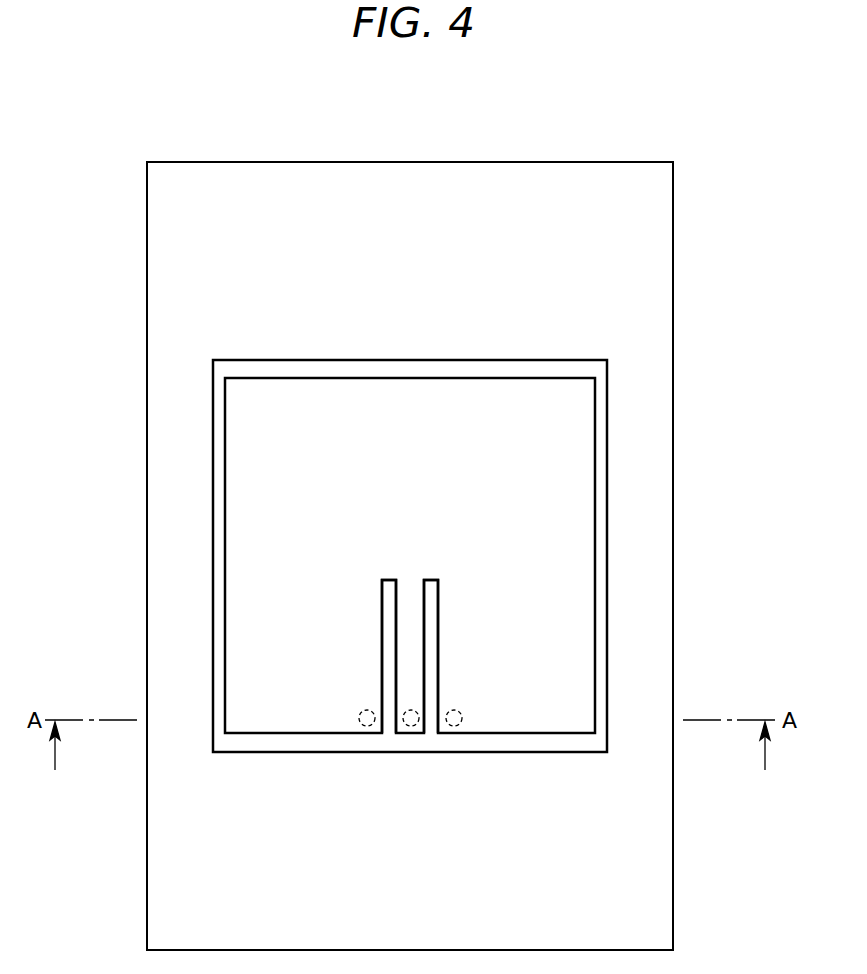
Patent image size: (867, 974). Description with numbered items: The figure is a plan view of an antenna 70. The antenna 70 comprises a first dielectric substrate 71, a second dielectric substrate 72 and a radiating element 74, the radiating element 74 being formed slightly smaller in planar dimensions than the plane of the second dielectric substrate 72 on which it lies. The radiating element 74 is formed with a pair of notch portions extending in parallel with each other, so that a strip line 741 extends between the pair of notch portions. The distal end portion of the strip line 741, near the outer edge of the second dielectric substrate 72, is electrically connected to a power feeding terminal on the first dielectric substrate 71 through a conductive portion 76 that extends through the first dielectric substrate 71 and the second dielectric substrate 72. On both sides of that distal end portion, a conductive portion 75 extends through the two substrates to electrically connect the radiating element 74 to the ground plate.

The antenna 70 is at (178, 163).
The first dielectric substrate 71 is at (650, 212).
The second dielectric substrate 72 is at (600, 371).
The radiating element 74 is at (578, 592).
The strip line 741 is at (410, 657).
The conductive portion 75 is at (359, 726).
The conductive portion 76 is at (402, 726).